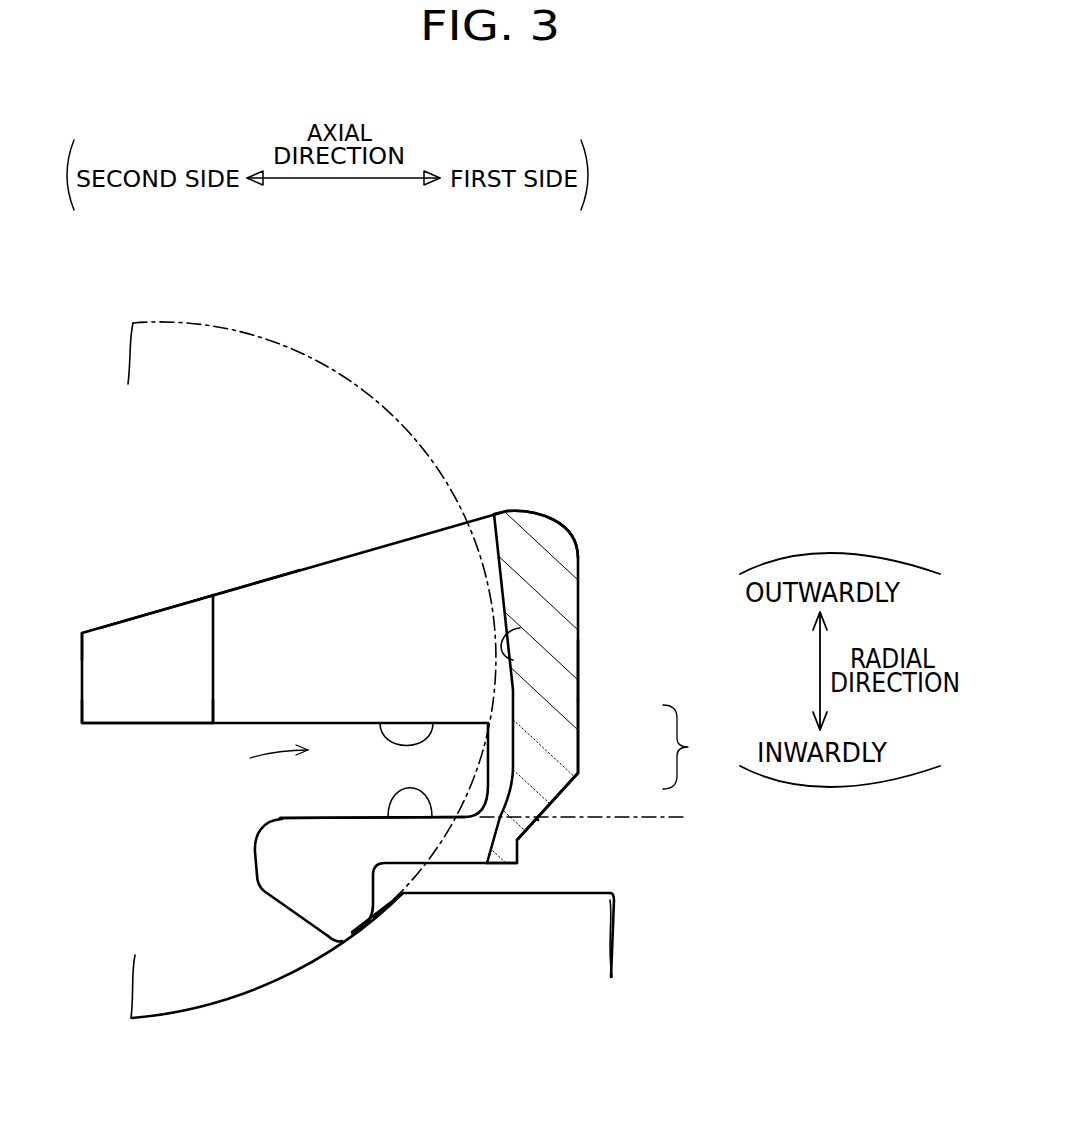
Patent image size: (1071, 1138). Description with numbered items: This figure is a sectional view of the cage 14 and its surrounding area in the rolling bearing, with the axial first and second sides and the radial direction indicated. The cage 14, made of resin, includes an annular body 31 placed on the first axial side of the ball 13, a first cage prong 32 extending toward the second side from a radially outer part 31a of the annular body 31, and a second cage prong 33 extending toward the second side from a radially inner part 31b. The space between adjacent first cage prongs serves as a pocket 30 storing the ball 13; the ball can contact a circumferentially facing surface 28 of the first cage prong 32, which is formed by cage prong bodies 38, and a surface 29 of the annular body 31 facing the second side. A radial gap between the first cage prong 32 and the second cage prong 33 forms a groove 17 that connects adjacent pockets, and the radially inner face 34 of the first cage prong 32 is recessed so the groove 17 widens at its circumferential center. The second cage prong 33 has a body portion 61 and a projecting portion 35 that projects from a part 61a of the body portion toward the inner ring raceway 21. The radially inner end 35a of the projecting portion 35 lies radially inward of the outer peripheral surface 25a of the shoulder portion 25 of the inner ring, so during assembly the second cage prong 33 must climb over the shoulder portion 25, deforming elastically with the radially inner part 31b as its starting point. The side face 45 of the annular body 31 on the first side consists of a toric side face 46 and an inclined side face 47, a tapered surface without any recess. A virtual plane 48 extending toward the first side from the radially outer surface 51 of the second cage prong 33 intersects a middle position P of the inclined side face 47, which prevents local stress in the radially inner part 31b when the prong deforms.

The ball 13 is at (395, 437).
The cage 14 is at (546, 513).
The groove 17 is at (234, 764).
The inner ring raceway 21 is at (300, 957).
The shoulder portion 25 is at (590, 927).
The outer peripheral surface 25a is at (583, 892).
The surface 28 is at (142, 667).
The surface 29 is at (520, 628).
The pocket 30 is at (275, 610).
The annular body 31 is at (578, 675).
The radially outer part 31a is at (543, 582).
The radially inner part 31b is at (505, 852).
The first cage prong 32 is at (80, 632).
The second cage prong 33 is at (255, 850).
The radially inner face 34 is at (430, 723).
The projecting portion 35 is at (297, 893).
The radially inner end 35a is at (336, 944).
The cage prong body 38 is at (157, 607).
The side face 45 is at (693, 747).
The toric side face 46 is at (578, 722).
The inclined side face 47 is at (567, 793).
The virtual plane 48 is at (640, 820).
The radially outer surface 51 is at (432, 817).
The body portion 61 is at (376, 838).
The part on the second side 61a is at (307, 842).
The middle position P is at (538, 820).